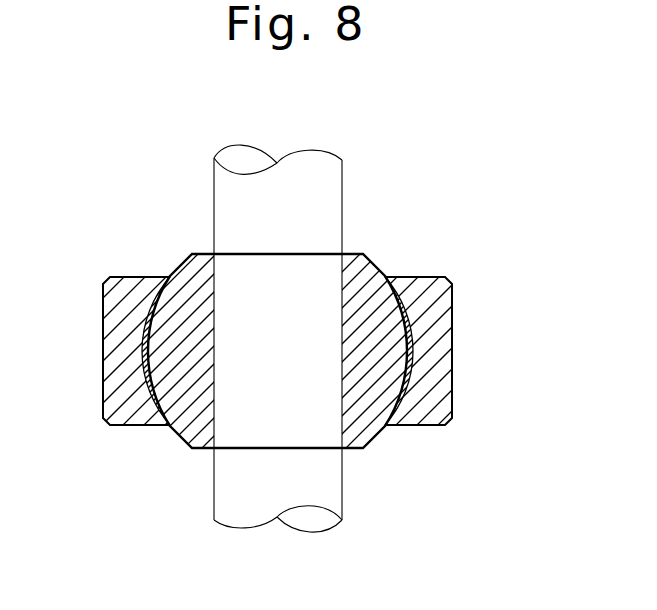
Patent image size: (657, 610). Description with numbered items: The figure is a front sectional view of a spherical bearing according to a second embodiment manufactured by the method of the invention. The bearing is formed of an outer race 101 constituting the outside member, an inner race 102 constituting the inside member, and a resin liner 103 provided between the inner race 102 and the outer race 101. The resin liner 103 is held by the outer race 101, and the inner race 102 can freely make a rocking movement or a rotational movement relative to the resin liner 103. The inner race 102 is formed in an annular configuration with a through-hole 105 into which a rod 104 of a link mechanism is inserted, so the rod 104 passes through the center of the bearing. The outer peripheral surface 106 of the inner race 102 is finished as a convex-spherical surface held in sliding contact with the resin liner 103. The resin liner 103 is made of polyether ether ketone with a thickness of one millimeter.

The outer race 101 is at (446, 311).
The inner race 102 is at (187, 258).
The resin liner 103 is at (141, 392).
The rod 104 is at (343, 170).
The through-hole 105 is at (228, 432).
The outer peripheral surface 106 is at (372, 265).